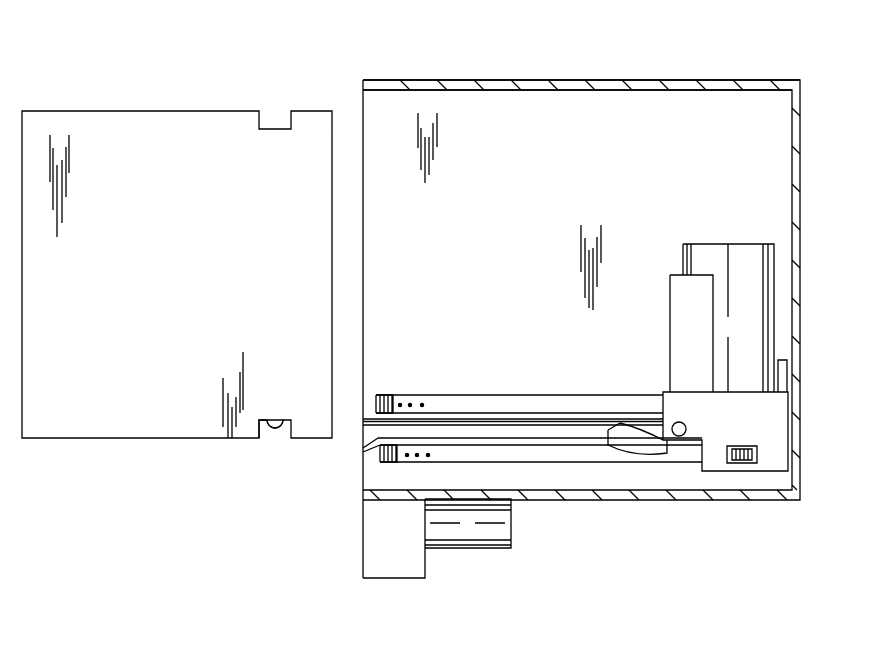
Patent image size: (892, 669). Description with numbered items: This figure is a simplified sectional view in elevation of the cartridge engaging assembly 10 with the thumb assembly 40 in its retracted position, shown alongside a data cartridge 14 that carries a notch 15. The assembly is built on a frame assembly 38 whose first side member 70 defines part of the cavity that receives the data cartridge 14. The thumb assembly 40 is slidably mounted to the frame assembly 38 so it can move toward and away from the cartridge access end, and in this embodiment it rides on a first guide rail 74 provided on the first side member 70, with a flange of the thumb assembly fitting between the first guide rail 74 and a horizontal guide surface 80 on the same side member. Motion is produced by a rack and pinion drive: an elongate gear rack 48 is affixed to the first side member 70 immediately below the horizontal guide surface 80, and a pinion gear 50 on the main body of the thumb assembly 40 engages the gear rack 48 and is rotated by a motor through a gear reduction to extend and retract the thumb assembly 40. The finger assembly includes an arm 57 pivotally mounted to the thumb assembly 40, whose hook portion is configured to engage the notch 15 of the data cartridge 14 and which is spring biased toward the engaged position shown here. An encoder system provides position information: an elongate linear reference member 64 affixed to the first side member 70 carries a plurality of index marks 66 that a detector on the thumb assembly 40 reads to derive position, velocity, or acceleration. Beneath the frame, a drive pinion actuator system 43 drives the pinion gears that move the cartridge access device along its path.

The cartridge engaging assembly 10 is at (342, 48).
The data cartridge 14 is at (170, 104).
The notch 15 is at (280, 420).
The frame assembly 38 is at (812, 131).
The thumb assembly 40 is at (719, 235).
The drive pinion actuator system 43 is at (468, 560).
The gear rack 48 is at (388, 463).
The pinion gear 50 is at (757, 454).
The arm 57 is at (643, 455).
The elongate linear reference member 64 is at (519, 371).
The index marks 66 is at (397, 402).
The first side member 70 is at (640, 80).
The first guide rail 74 is at (536, 420).
The horizontal guide surface 80 is at (508, 425).